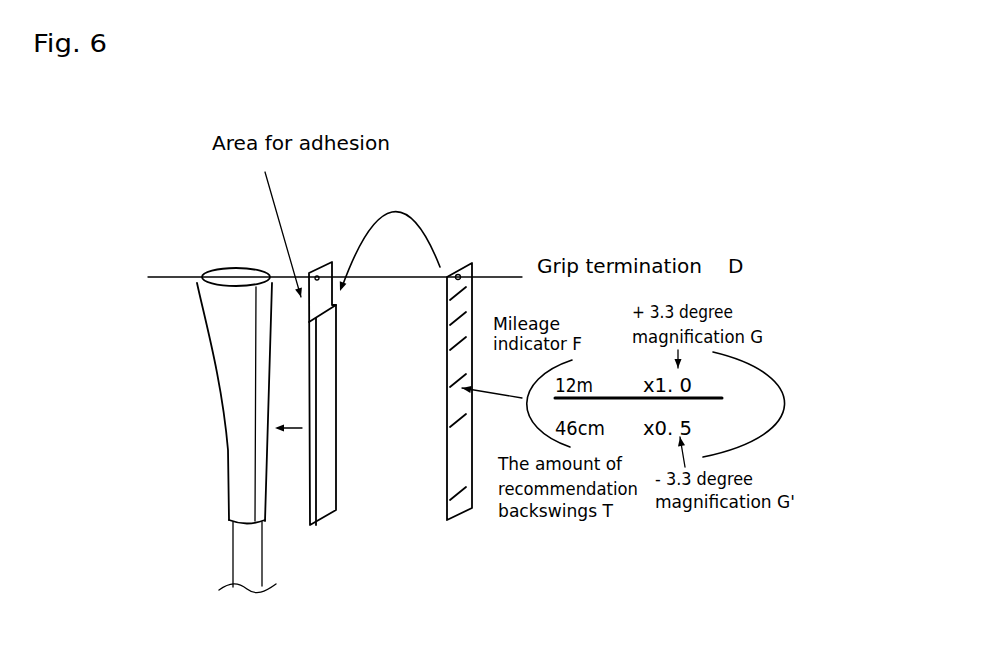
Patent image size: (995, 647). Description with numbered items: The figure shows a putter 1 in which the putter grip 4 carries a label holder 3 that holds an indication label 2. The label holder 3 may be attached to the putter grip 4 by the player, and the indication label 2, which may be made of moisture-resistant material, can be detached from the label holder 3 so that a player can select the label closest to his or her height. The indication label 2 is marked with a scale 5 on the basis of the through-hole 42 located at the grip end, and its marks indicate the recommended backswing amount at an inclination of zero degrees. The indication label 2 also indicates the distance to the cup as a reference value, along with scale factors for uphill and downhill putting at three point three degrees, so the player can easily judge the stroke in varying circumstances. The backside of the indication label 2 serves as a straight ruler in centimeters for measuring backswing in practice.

The putter 1 is at (191, 404).
The indication label 2 is at (461, 473).
The label holder 3 is at (323, 480).
The putter grip 4 is at (189, 403).
The scale 5 is at (461, 303).
The through-hole 42 is at (459, 262).